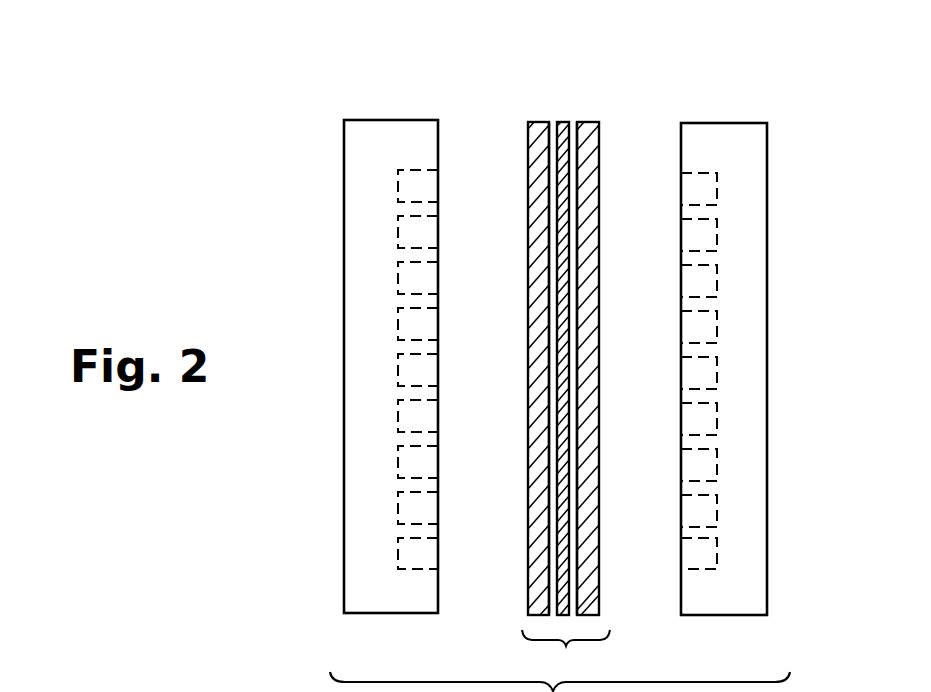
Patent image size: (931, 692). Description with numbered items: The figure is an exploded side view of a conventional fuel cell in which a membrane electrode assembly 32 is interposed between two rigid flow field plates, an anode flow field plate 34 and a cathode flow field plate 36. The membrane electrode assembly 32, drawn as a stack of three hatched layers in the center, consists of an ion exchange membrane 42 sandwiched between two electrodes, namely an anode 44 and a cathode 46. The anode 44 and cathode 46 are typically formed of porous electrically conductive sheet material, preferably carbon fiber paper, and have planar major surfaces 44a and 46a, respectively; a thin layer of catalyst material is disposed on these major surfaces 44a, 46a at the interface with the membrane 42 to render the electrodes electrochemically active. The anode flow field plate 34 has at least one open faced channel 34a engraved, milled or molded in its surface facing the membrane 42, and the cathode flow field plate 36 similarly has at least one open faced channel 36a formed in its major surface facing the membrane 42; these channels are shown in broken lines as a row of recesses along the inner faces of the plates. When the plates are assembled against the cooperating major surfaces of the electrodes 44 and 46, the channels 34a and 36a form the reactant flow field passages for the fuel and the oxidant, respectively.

The membrane electrode assembly 32 is at (566, 654).
The anode flow field plate 34 is at (767, 313).
The open faced channel 34a is at (717, 420).
The cathode flow field plate 36 is at (344, 270).
The open faced channel 36a is at (398, 372).
The ion exchange membrane 42 is at (563, 122).
The anode 44 is at (588, 122).
The planar major surface 44a is at (577, 122).
The cathode 46 is at (533, 122).
The planar major surface 46a is at (550, 122).